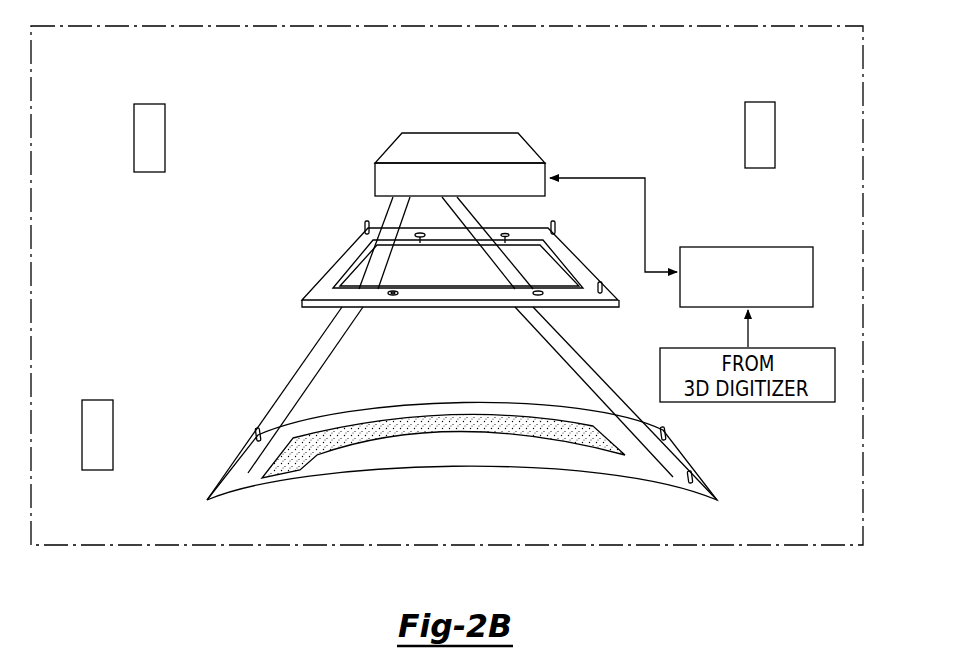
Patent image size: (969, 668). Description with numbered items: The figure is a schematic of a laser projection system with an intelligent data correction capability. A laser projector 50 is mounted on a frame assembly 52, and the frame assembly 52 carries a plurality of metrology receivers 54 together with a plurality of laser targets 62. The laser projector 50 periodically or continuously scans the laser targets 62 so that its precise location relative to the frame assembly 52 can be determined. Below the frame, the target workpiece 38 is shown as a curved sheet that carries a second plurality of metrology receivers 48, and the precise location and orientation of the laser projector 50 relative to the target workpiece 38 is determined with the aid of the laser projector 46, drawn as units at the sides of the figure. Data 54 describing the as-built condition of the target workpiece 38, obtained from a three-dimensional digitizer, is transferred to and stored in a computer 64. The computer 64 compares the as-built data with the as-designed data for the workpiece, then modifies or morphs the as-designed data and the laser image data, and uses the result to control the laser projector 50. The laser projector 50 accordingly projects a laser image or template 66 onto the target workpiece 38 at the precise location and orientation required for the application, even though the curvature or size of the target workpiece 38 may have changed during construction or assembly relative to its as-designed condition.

The target workpiece 38 is at (490, 447).
The laser projector 46 is at (100, 413).
The metrology receivers 48 is at (255, 433).
The laser projector 50 is at (480, 143).
The frame assembly 52 is at (342, 265).
The metrology receivers 54 is at (365, 227).
The laser targets 62 is at (393, 291).
The computer 64 is at (747, 253).
The laser image or template 66 is at (482, 417).